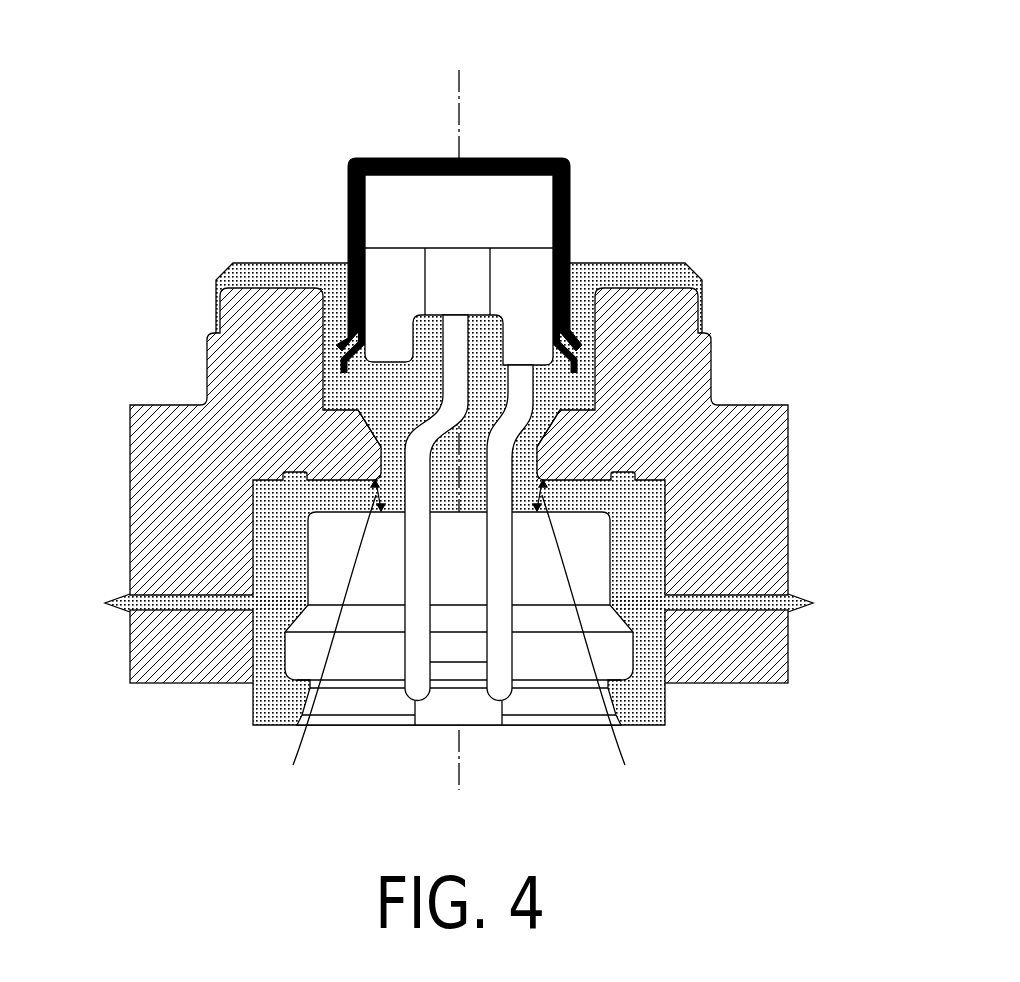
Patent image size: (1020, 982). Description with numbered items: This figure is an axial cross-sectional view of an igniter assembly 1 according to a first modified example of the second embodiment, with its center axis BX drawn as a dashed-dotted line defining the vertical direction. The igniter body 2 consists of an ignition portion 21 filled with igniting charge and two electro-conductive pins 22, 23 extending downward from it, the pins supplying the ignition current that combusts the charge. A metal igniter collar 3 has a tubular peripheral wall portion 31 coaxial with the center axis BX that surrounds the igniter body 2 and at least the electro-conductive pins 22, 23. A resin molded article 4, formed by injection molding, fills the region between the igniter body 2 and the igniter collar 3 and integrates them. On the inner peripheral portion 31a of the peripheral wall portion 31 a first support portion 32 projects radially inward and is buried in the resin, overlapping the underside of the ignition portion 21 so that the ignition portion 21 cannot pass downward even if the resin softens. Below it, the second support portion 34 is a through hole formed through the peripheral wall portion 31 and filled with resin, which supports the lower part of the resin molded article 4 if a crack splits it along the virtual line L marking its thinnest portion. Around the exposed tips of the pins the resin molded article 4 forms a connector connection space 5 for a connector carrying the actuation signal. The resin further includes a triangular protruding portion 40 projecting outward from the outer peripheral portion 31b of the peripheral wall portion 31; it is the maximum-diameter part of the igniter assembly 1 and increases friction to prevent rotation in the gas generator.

The igniter assembly 1 is at (722, 132).
The igniter body 2 is at (667, 153).
The ignition portion 21 is at (572, 193).
The electro-conductive pin 22 is at (470, 348).
The electro-conductive pin 23 is at (518, 392).
The igniter collar 3 is at (150, 532).
The peripheral wall portion 31 is at (414, 482).
The inner peripheral portion 31a is at (330, 377).
The outer peripheral portion 31b is at (133, 485).
The first support portion 32 is at (362, 443).
The second support portion 34 is at (197, 603).
The resin molded article 4 is at (265, 648).
The protruding portion 40 is at (100, 600).
The connector connection space 5 is at (553, 581).
The center axis BX is at (493, 430).
The virtual line L is at (452, 637).